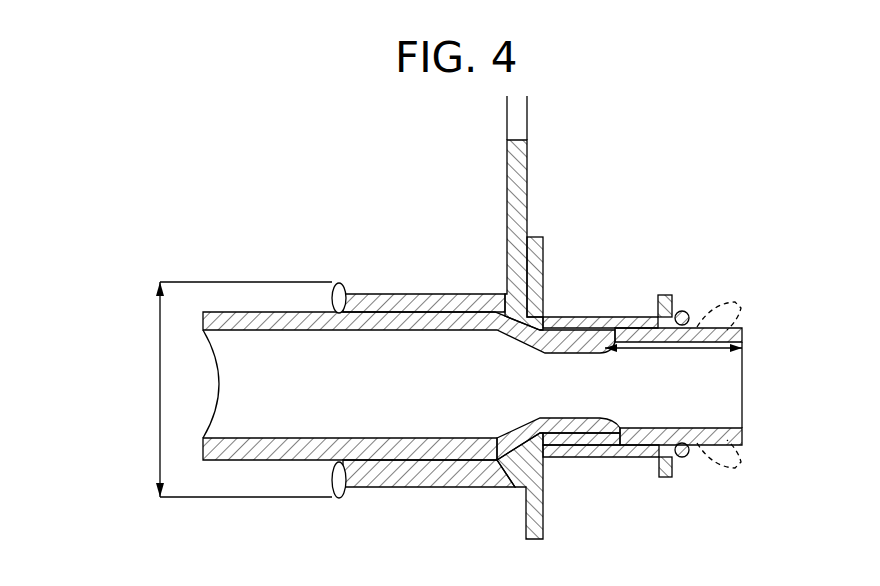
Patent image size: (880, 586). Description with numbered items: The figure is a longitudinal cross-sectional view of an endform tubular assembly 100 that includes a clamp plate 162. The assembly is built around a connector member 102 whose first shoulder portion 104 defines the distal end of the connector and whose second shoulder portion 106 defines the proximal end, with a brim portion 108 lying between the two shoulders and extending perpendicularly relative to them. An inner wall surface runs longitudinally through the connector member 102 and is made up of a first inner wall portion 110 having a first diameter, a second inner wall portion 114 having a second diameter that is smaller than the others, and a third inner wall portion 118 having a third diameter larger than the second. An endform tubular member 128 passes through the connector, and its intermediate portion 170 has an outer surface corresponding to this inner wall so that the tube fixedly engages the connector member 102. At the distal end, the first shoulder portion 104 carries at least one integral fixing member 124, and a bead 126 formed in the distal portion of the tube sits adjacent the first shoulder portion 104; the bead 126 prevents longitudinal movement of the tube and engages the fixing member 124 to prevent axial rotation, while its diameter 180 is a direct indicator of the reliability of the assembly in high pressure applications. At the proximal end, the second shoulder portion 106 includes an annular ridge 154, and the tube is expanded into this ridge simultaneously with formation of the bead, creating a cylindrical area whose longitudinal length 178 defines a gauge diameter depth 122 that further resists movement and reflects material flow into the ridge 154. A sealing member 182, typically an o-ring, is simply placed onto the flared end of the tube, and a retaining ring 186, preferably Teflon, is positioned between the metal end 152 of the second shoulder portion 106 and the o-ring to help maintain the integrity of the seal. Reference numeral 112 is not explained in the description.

The endform tubular assembly 100 is at (355, 181).
The connector member 102 is at (557, 306).
The first shoulder portion 104 is at (436, 293).
The second shoulder portion 106 is at (601, 317).
The brim portion 108 is at (545, 238).
The first inner wall portion 110 is at (420, 465).
The inner tube 112 is at (248, 312).
The second inner wall portion 114 is at (555, 420).
The third inner wall portion 118 is at (627, 446).
The gauge diameter depth 122 is at (726, 404).
The fixing member 124 is at (337, 290).
The bead 126 is at (333, 480).
The endform tubular member 128 is at (213, 312).
The metal end 152 is at (690, 313).
The annular ridge 154 is at (646, 316).
The clamp plate 162 is at (528, 160).
The intermediate portion 170 is at (585, 445).
The longitudinal length 178 is at (683, 352).
The diameter 180 is at (160, 392).
The sealing member 182 is at (684, 460).
The retaining ring 186 is at (667, 478).